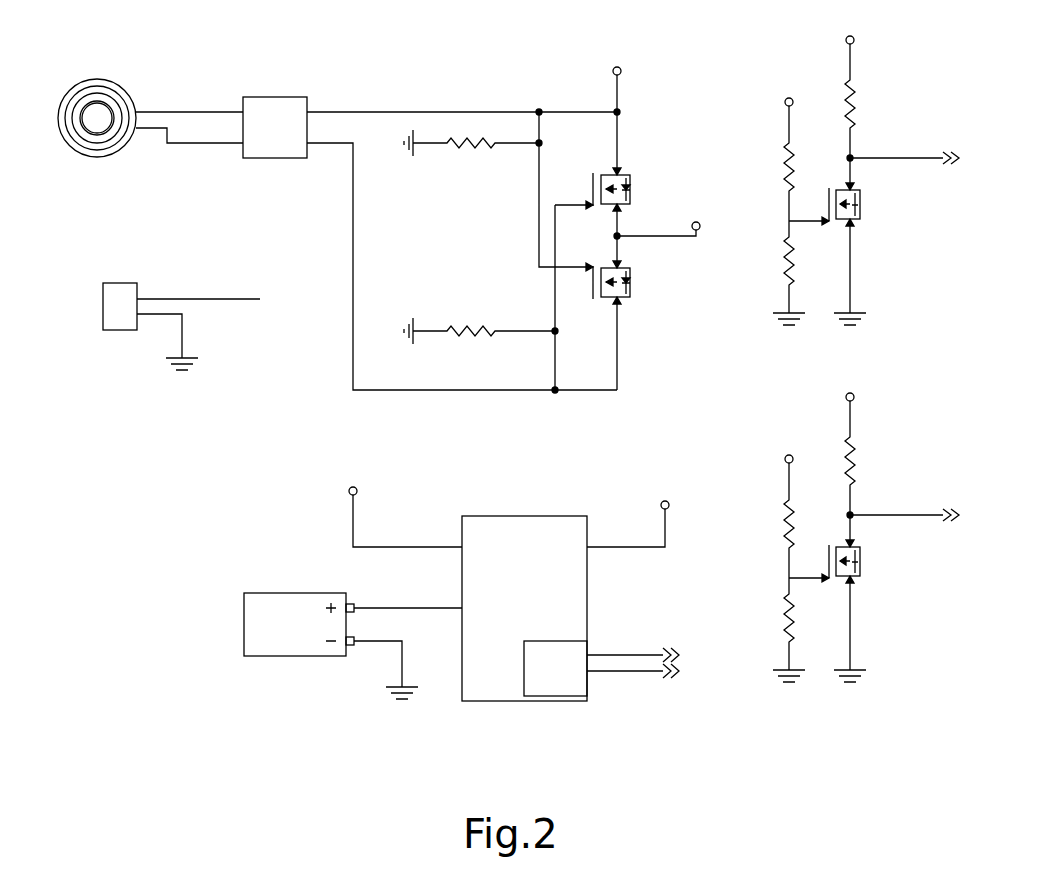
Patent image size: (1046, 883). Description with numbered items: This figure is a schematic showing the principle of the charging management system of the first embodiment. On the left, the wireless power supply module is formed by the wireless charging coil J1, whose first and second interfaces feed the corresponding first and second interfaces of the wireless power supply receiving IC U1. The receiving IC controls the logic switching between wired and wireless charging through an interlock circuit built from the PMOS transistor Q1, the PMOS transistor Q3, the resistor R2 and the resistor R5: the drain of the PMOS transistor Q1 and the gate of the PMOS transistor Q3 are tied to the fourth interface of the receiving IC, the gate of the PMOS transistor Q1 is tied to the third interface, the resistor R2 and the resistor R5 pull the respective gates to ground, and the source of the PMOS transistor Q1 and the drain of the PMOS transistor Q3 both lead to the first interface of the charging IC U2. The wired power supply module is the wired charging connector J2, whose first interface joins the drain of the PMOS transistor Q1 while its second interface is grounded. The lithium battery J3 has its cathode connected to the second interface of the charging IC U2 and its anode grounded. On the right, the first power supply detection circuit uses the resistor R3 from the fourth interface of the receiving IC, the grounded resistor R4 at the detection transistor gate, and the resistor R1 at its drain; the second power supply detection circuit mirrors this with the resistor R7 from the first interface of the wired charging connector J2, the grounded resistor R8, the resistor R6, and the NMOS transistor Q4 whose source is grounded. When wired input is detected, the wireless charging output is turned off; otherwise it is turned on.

The wireless charging coil J1 is at (143, 111).
The wired charging connector J2 is at (173, 327).
The battery connector J3 is at (353, 643).
The RF module U1 is at (273, 114).
The controller module U2 is at (514, 594).
The resistor R1 is at (890, 100).
The resistor R2 is at (449, 134).
The resistor R3 is at (775, 159).
The resistor R4 is at (783, 274).
The resistor R5 is at (457, 322).
The resistor R6 is at (890, 457).
The resistor R7 is at (775, 516).
The resistor R8 is at (783, 631).
The PMOS transistor Q1 is at (724, 231).
The PMOS transistor Q3 is at (628, 328).
The NMOS transistor Q4 is at (839, 611).